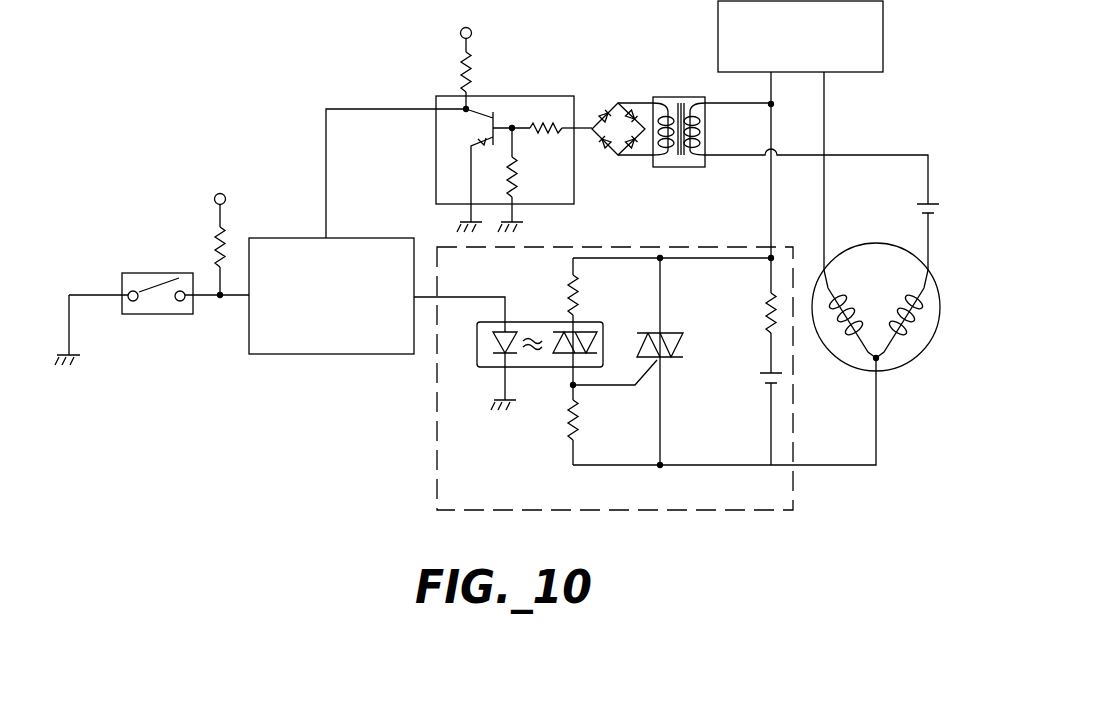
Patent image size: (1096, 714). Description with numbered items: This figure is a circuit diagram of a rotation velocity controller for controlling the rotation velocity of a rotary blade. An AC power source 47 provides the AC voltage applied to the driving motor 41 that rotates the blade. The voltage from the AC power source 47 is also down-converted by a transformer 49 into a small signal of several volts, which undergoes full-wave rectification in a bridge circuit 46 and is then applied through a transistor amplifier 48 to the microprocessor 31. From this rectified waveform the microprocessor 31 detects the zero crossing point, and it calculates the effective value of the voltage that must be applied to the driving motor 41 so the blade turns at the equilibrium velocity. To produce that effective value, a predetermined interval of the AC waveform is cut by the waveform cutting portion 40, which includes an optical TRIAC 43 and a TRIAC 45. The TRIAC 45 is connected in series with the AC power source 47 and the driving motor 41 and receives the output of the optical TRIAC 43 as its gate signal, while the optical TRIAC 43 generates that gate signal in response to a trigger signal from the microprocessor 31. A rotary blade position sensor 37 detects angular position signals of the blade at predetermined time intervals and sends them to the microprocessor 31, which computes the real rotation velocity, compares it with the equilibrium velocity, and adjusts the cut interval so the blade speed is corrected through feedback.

The microprocessor 31 is at (301, 355).
The rotary blade position sensor 37 is at (149, 314).
The waveform cutting portion 40 is at (793, 495).
The driving motor 41 is at (898, 368).
The optical TRIAC 43 is at (490, 367).
The TRIAC 45 is at (669, 358).
The bridge circuit 46 is at (618, 103).
The AC power source 47 is at (883, 40).
The transistor amplifier 48 is at (513, 96).
The transformer 49 is at (665, 97).